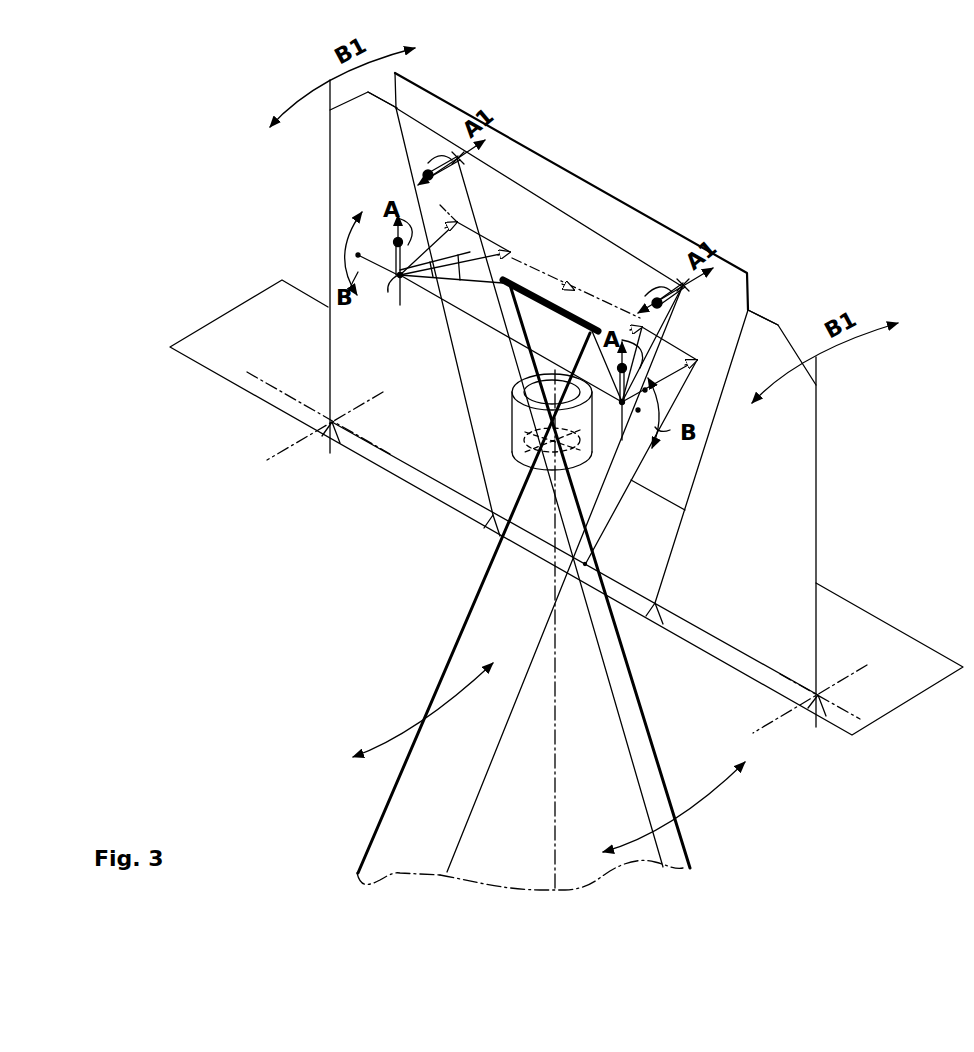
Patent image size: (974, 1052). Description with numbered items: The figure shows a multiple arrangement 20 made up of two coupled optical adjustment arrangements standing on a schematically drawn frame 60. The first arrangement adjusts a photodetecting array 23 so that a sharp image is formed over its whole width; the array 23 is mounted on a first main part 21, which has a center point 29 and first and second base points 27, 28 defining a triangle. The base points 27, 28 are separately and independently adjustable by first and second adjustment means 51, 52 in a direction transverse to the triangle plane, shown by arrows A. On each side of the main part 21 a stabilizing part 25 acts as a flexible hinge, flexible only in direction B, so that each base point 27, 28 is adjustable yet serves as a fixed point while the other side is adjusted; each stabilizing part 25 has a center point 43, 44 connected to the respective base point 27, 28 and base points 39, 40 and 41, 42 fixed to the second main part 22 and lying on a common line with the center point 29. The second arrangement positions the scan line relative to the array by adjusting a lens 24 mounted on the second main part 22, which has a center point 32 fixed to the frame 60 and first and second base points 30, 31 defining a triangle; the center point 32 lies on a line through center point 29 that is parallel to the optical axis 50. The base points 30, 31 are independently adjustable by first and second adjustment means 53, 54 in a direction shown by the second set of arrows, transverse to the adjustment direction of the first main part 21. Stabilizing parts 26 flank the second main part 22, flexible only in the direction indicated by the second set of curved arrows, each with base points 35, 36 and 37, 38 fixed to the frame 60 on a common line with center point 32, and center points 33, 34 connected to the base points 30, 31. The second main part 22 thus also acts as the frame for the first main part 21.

The multiple arrangement 20 is at (615, 122).
The first main part 21 is at (511, 327).
The second main part 22 is at (548, 170).
The photodetecting array 23 is at (548, 294).
The lens 24 is at (512, 432).
The stabilizing part 25 is at (548, 312).
The stabilizing part 26 is at (573, 403).
The first base point 27 is at (416, 296).
The second base point 28 is at (618, 408).
The center point 29 is at (576, 289).
The first base point 30 is at (464, 159).
The second base point 31 is at (686, 287).
The center point 32 is at (586, 563).
The center point 33 is at (392, 102).
The center point 34 is at (750, 310).
The first base point 35 is at (330, 420).
The second base point 36 is at (494, 514).
The first base point 37 is at (654, 602).
The second base point 38 is at (822, 695).
The first base point 39 is at (448, 222).
The second base point 40 is at (502, 237).
The first base point 41 is at (645, 328).
The second base point 42 is at (702, 359).
The center point 43 is at (387, 297).
The center point 44 is at (654, 402).
The optical axis 50 is at (557, 692).
The first adjustment means 51 is at (396, 248).
The second adjustment means 52 is at (618, 372).
The first adjustment means 53 is at (446, 158).
The second adjustment means 54 is at (672, 300).
The frame 60 is at (898, 640).